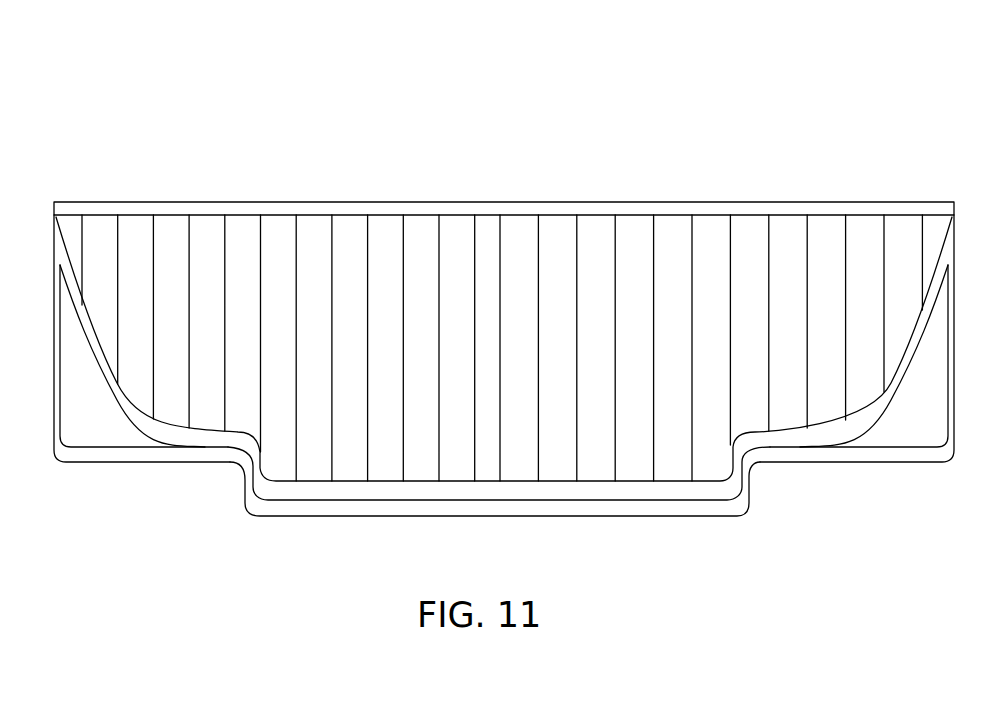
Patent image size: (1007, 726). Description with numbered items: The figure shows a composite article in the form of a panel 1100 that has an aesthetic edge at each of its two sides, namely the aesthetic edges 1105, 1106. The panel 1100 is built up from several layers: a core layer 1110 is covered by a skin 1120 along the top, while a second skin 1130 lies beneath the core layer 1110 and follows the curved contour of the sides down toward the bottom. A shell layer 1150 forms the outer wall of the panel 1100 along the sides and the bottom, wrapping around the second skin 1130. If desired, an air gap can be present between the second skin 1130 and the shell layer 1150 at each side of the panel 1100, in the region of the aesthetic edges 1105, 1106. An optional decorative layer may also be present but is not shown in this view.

The panel 1100 is at (285, 159).
The core layer 1110 is at (448, 227).
The skin 1120 is at (590, 202).
The second skin 1130 is at (877, 400).
The aesthetic edge 1105 is at (67, 488).
The aesthetic edge 1106 is at (950, 486).
The shell layer 1150 is at (147, 455).